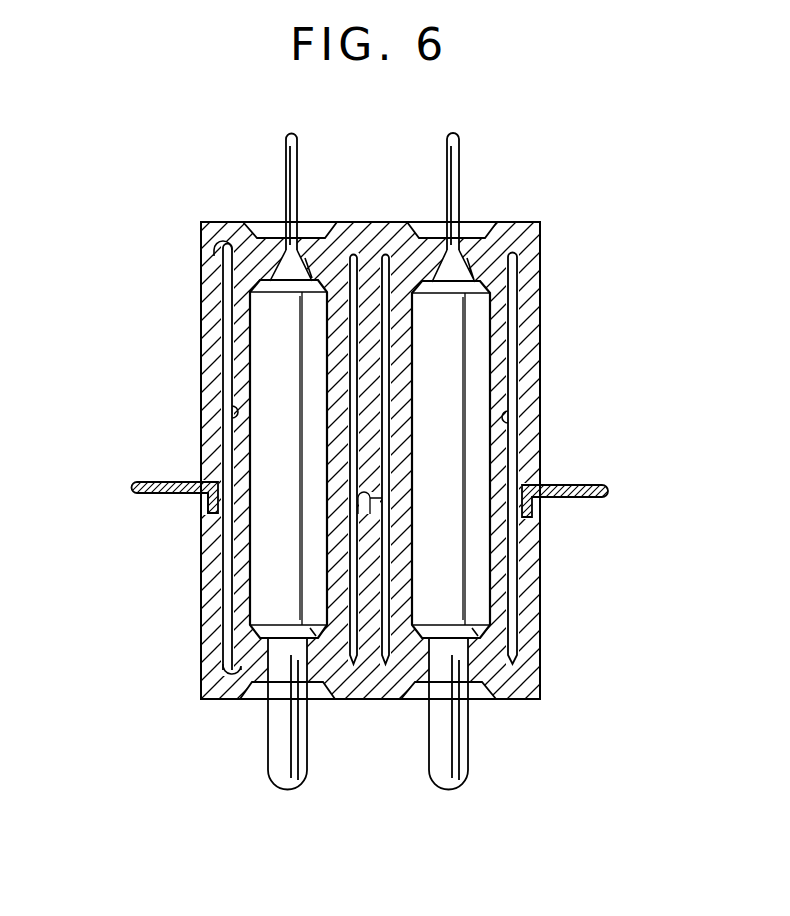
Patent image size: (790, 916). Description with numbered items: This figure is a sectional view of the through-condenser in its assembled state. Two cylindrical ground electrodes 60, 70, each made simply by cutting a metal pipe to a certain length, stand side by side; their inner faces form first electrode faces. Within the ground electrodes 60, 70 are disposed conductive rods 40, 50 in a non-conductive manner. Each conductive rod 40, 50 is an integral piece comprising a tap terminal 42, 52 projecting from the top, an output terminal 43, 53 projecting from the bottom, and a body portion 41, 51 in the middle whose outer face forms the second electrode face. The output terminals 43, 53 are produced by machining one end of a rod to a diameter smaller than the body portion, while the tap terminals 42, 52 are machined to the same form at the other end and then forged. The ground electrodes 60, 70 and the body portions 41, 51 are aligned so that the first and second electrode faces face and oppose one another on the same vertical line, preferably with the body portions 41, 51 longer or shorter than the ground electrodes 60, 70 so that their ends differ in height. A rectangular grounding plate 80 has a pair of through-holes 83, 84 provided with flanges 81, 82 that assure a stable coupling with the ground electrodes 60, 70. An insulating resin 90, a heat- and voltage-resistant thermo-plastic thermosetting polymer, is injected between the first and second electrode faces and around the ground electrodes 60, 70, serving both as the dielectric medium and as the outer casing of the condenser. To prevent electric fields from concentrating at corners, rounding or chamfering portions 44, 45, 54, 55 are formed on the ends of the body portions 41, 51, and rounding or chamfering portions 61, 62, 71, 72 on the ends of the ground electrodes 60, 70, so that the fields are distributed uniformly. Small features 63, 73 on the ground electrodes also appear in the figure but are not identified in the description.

The conductive rod 40 is at (229, 452).
The body portion 41 is at (250, 330).
The tap terminal 42 is at (286, 175).
The output terminal 43 is at (278, 748).
The rounding or chamfering portion 44 is at (264, 280).
The rounding or chamfering portion 45 is at (312, 641).
The conductive rod 50 is at (515, 461).
The body portion 51 is at (495, 325).
The tap terminal 52 is at (459, 176).
The output terminal 53 is at (468, 752).
The rounding or chamfering portion 54 is at (483, 282).
The rounding or chamfering portion 55 is at (490, 642).
The ground electrode 60 is at (182, 495).
The rounding or chamfering portion 61 is at (225, 244).
The rounding or chamfering portion 62 is at (225, 668).
The protrusion in first slot 63 is at (233, 410).
The ground electrode 70 is at (563, 459).
The rounding or chamfering portion 71 is at (355, 258).
The rounding or chamfering portion 72 is at (388, 665).
The protrusion in second slot 73 is at (510, 414).
The grounding plate 80 is at (134, 488).
The flange 81 is at (208, 512).
The flange 82 is at (578, 491).
The through-hole 83 is at (215, 480).
The through-hole 84 is at (522, 480).
The insulating resin 90 is at (205, 639).